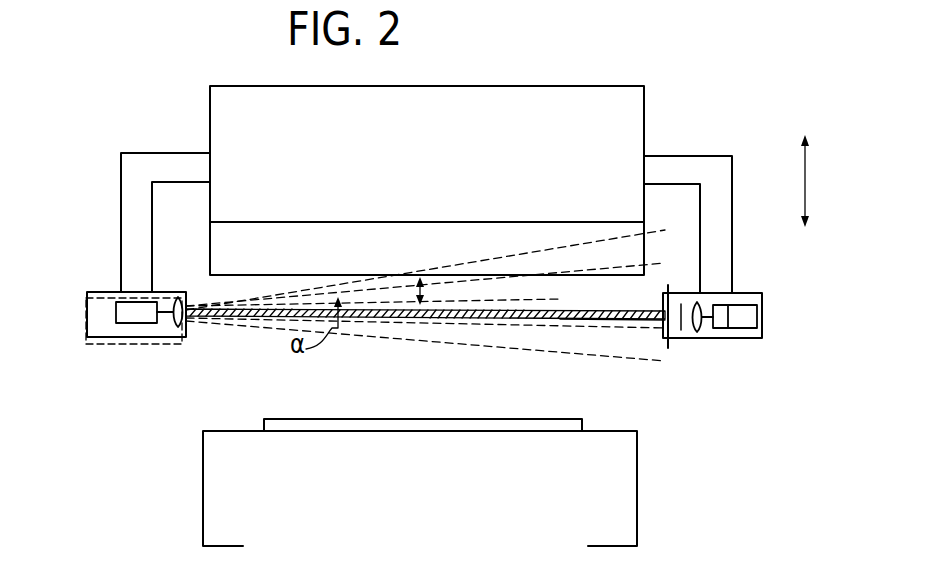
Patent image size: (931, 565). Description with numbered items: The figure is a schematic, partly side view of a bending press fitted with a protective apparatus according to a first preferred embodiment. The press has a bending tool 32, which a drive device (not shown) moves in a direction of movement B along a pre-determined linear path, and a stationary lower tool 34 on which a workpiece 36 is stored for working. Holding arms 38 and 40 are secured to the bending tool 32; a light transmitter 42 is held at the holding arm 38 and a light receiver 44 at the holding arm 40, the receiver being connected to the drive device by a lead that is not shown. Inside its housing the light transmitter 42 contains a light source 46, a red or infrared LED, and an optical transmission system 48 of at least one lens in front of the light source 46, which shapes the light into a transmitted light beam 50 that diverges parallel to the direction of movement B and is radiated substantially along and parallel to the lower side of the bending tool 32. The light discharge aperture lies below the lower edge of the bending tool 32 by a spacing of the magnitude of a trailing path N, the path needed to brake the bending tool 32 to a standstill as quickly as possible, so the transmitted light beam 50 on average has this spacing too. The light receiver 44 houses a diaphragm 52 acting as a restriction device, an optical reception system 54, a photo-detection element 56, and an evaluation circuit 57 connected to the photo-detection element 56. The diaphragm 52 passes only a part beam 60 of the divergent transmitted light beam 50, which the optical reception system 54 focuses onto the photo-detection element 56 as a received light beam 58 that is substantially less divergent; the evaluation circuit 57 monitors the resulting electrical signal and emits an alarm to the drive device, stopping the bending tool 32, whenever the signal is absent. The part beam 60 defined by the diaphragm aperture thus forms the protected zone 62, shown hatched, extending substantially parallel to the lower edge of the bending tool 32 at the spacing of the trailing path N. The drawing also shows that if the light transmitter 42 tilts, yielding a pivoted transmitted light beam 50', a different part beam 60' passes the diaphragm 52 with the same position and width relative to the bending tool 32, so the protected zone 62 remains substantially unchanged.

The bending tool 32 is at (588, 112).
The lower tool 34 is at (216, 463).
The workpiece 36 is at (370, 422).
The holding arm 38 is at (180, 160).
The holding arm 40 is at (670, 172).
The light transmitter 42 is at (98, 284).
The light receiver 44 is at (759, 286).
The light source 46 is at (132, 318).
The optical transmission system 48 is at (178, 325).
The transmitted light beam 50 is at (425, 345).
The pivoted transmitted light beam 50' is at (425, 245).
The diaphragm 52 is at (665, 345).
The optical reception system 54 is at (698, 333).
The photo-detection element 56 is at (720, 322).
The evaluation circuit 57 is at (744, 315).
The received light beam 58 is at (682, 332).
The part beam 60 is at (437, 274).
The part beam 60' is at (425, 350).
The protected zone 62 is at (620, 320).
The trailing path N is at (414, 277).
The direction of movement B is at (808, 181).